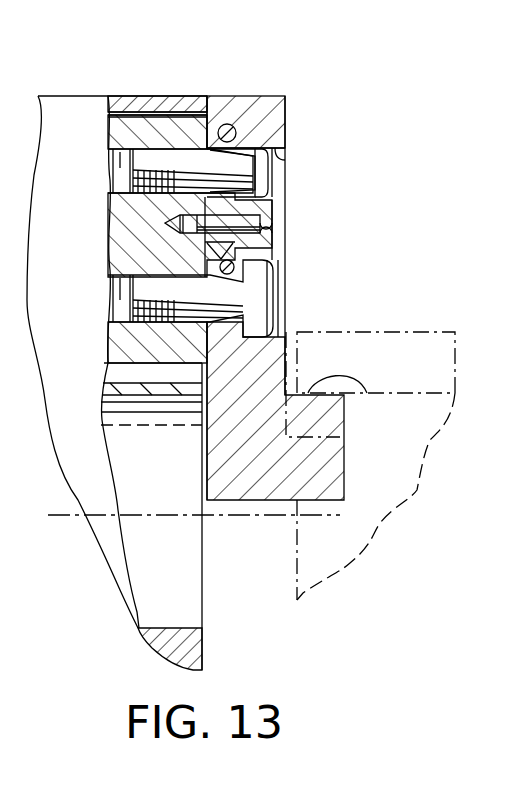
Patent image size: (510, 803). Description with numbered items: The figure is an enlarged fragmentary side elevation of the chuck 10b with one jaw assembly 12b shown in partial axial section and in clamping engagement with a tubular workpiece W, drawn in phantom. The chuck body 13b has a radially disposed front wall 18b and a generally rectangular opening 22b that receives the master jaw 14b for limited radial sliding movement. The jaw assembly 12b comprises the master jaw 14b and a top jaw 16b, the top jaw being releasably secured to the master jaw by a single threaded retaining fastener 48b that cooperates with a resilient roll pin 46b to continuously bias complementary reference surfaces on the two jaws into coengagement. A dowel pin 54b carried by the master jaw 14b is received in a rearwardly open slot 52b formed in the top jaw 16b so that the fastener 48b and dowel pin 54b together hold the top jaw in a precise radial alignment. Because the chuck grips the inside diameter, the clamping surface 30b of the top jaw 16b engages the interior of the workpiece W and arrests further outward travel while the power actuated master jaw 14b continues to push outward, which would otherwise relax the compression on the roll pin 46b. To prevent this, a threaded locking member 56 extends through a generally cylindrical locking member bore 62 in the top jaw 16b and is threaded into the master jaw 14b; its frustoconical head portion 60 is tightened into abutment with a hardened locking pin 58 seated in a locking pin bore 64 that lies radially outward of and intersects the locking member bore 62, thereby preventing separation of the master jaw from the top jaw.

The chuck 10b is at (196, 66).
The jaw assembly 12b is at (305, 76).
The chuck body 13b is at (110, 546).
The master jaw 14b is at (97, 142).
The top jaw 16b is at (297, 115).
The front wall 18b is at (205, 641).
The opening 22b is at (118, 375).
The clamping surface 30b is at (367, 393).
The roll pin 46b is at (236, 265).
The retaining fastener 48b is at (265, 301).
The slot 52b is at (263, 221).
The dowel pin 54b is at (282, 201).
The locking member 56 is at (268, 172).
The locking pin 58 is at (229, 125).
The head portion 60 is at (238, 162).
The locking member bore 62 is at (283, 153).
The locking pin bore 64 is at (205, 118).
The workpiece W is at (368, 332).